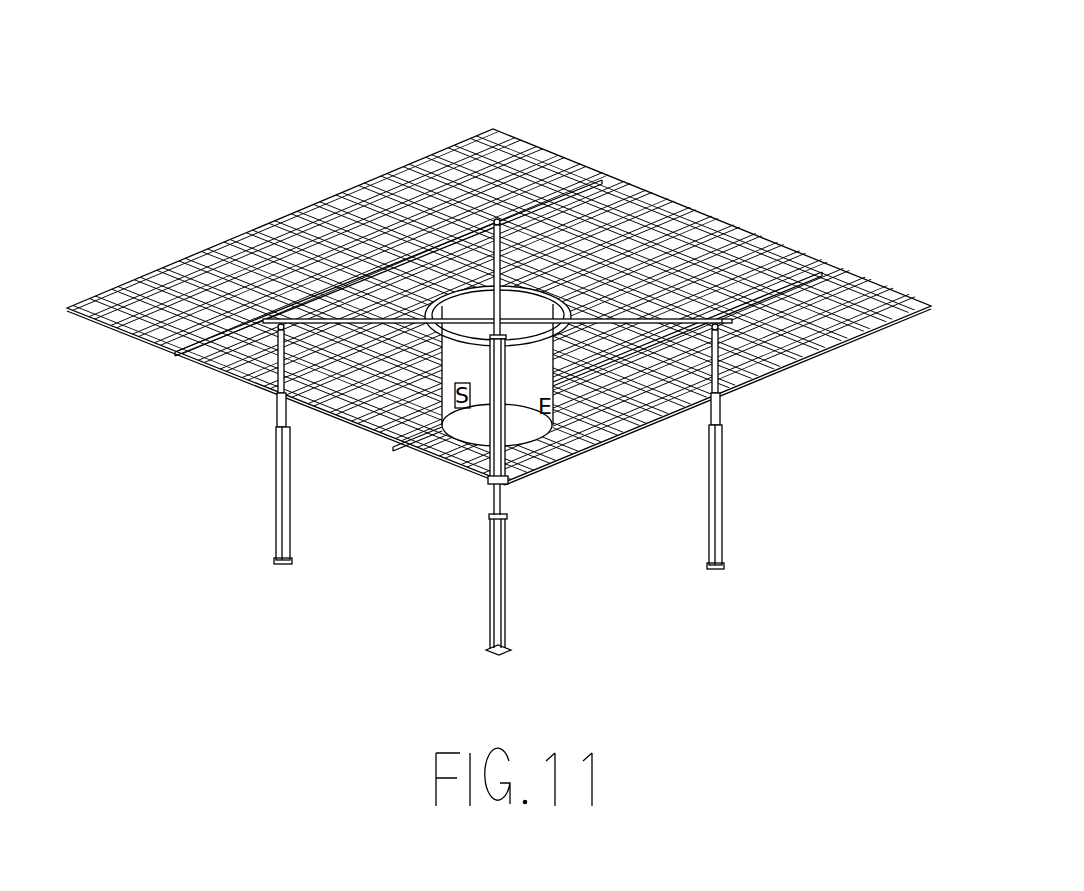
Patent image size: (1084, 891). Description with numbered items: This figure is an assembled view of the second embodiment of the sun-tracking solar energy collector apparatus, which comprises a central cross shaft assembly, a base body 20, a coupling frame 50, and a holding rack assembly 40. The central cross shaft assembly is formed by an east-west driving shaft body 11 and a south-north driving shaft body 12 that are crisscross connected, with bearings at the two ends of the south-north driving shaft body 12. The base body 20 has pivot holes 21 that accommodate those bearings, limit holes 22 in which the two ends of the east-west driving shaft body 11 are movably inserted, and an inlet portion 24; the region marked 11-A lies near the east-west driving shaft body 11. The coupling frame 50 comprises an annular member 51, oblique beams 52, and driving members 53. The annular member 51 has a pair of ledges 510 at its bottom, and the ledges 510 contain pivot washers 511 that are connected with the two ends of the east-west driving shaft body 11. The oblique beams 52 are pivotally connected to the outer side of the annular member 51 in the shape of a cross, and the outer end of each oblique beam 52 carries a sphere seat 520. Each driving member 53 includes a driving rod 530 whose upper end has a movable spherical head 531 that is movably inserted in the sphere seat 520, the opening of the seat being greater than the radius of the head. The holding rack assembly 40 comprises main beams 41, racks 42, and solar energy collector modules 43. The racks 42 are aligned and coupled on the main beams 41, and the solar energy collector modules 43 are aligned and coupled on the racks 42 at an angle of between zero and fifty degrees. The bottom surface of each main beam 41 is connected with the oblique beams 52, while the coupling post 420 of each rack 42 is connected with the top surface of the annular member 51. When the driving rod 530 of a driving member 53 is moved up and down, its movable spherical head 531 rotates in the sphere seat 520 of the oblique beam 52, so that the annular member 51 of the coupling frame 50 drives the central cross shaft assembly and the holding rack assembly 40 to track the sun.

The east-west driving shaft body 11 is at (703, 215).
The platform front edge 11-A is at (286, 398).
The south-north driving shaft body 12 is at (298, 219).
The base body 20 is at (522, 492).
The pivot holes 21 is at (440, 392).
The limit holes 22 is at (560, 395).
The inlet portion 24 is at (440, 428).
The holding rack assembly 40 is at (532, 121).
The main beams 41 is at (450, 283).
The racks 42 is at (548, 284).
The solar energy collector modules 43 is at (757, 383).
The coupling post 420 is at (440, 291).
The coupling frame 50 is at (591, 156).
The annular member 51 is at (512, 280).
The ledges 510 is at (585, 395).
The pivot washers 511 is at (767, 247).
The oblique beams 52 is at (352, 398).
The sphere seat 520 is at (190, 361).
The driving members 53 is at (280, 490).
The driving rod 530 is at (278, 380).
The movable spherical head 531 is at (273, 388).